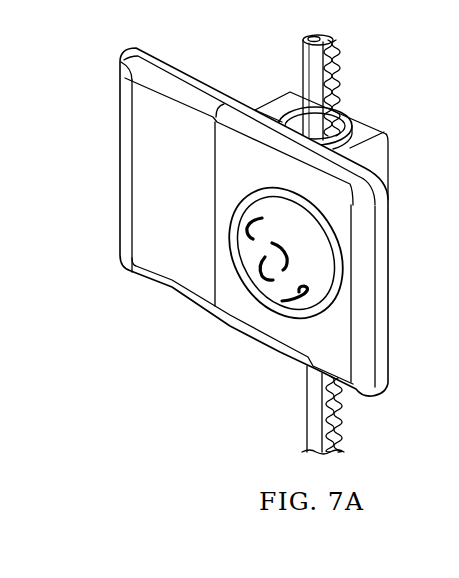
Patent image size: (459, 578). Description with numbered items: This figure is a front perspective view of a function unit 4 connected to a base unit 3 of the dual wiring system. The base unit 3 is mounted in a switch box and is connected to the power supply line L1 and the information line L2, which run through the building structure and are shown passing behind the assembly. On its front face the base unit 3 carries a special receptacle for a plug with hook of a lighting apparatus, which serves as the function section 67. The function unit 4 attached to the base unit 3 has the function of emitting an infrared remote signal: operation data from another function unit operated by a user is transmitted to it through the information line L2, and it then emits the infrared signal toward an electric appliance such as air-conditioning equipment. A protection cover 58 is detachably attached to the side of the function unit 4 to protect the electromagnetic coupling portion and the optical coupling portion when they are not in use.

The protection cover 58 is at (124, 128).
The function unit 4 is at (155, 217).
The base unit 3 is at (238, 300).
The function section 67 is at (272, 290).
The power supply line L1 is at (308, 73).
The information line L2 is at (336, 77).